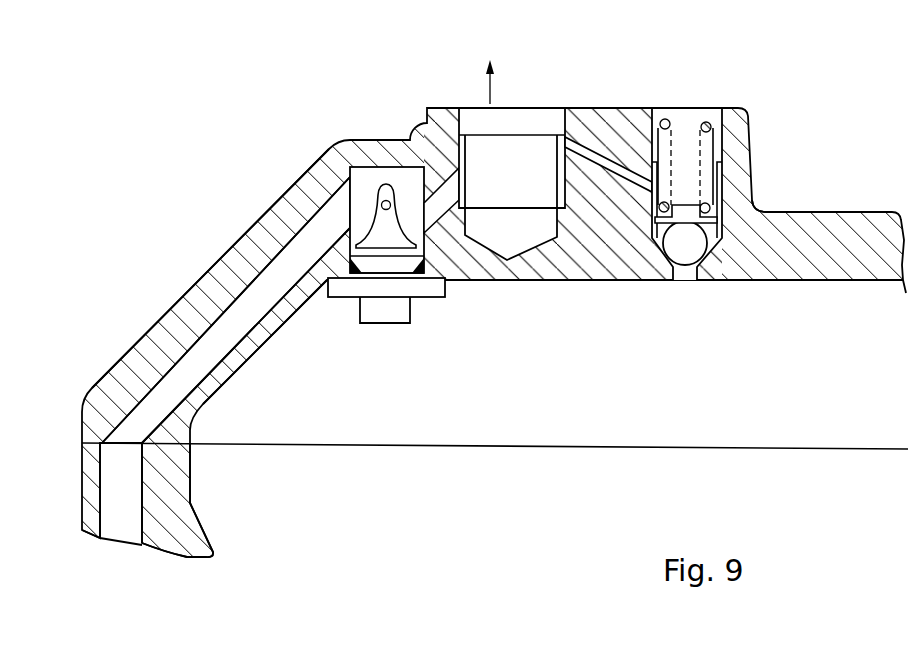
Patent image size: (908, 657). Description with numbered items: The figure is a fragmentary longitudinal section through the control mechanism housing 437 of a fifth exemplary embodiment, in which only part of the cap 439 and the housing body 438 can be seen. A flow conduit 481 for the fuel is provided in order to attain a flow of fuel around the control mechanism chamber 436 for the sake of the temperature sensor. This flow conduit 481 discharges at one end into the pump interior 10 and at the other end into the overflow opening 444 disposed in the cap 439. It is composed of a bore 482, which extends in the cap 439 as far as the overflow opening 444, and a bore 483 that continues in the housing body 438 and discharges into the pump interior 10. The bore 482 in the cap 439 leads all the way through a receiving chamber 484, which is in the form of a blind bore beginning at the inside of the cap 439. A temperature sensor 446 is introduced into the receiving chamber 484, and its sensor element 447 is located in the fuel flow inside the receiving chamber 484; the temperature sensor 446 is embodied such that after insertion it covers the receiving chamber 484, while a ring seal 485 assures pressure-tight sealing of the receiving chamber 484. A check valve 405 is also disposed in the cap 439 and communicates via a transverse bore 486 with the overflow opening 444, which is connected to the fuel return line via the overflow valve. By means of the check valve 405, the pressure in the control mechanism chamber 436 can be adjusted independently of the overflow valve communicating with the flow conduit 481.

The pump interior 10 is at (118, 560).
The check valve 405 is at (682, 162).
The control mechanism chamber 436 is at (722, 362).
The control mechanism housing 437 is at (797, 194).
The housing body 438 is at (165, 472).
The cap 439 is at (212, 305).
The overflow opening 444 is at (522, 157).
The temperature sensor 446 is at (428, 313).
The sensor element 447 is at (387, 199).
The flow conduit 481 is at (270, 272).
The bore 482 is at (320, 230).
The bore 483 is at (132, 502).
The receiving chamber 484 is at (367, 180).
The ring seal 485 is at (355, 262).
The transverse bore 486 is at (593, 143).